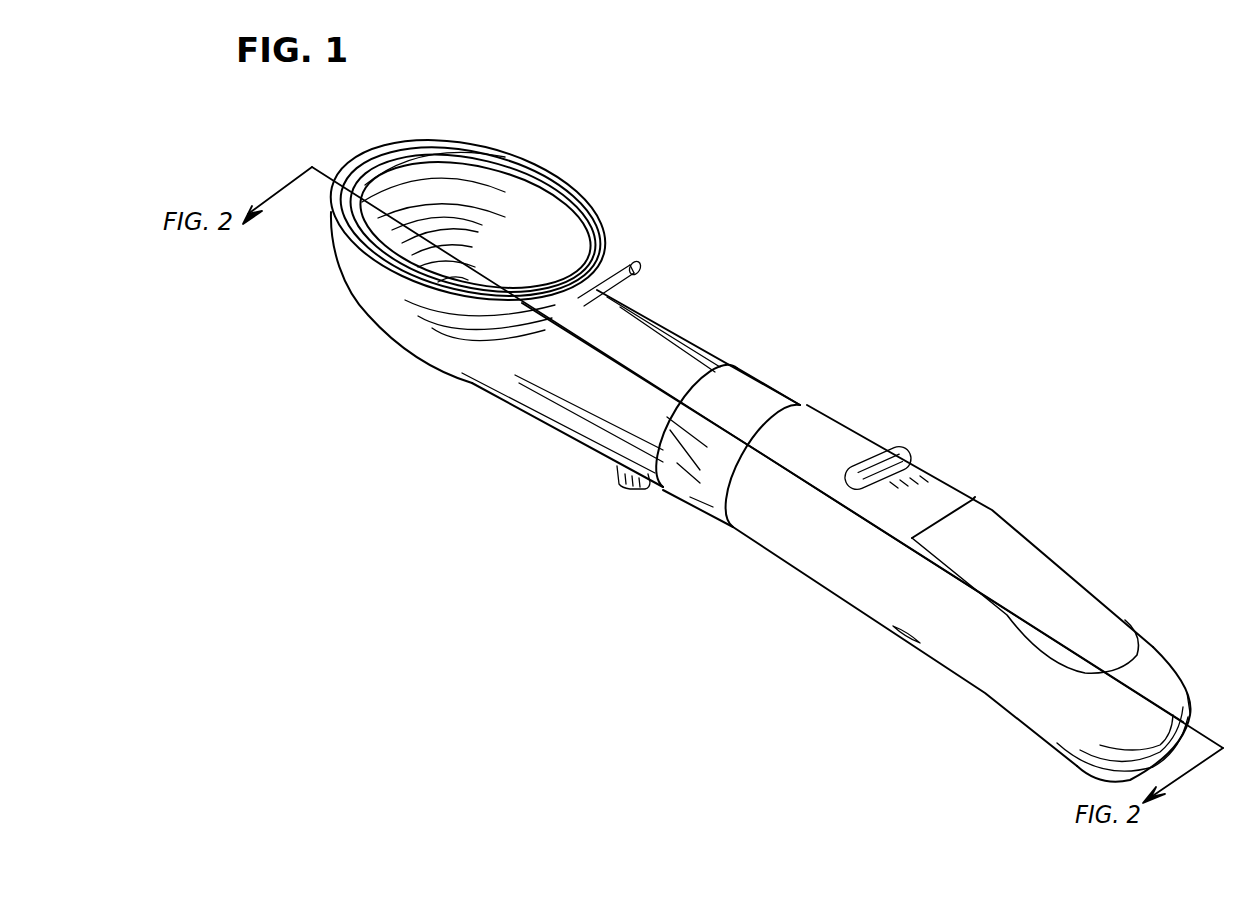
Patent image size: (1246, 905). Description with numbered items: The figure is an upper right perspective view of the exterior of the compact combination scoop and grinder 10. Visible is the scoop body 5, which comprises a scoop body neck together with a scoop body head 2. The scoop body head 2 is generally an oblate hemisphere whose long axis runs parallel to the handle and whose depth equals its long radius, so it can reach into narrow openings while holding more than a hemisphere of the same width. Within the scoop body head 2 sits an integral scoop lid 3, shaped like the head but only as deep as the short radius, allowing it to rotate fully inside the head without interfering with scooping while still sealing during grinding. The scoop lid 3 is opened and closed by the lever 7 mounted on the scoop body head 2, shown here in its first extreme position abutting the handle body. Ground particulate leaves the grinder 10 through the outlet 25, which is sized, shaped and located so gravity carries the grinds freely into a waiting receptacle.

The combination scoop and grinder 10 is at (887, 347).
The scoop body head 2 is at (578, 198).
The scoop lid 3 is at (530, 213).
The scoop body 5 is at (527, 414).
The lever 7 is at (640, 264).
The outlet 25 is at (643, 490).